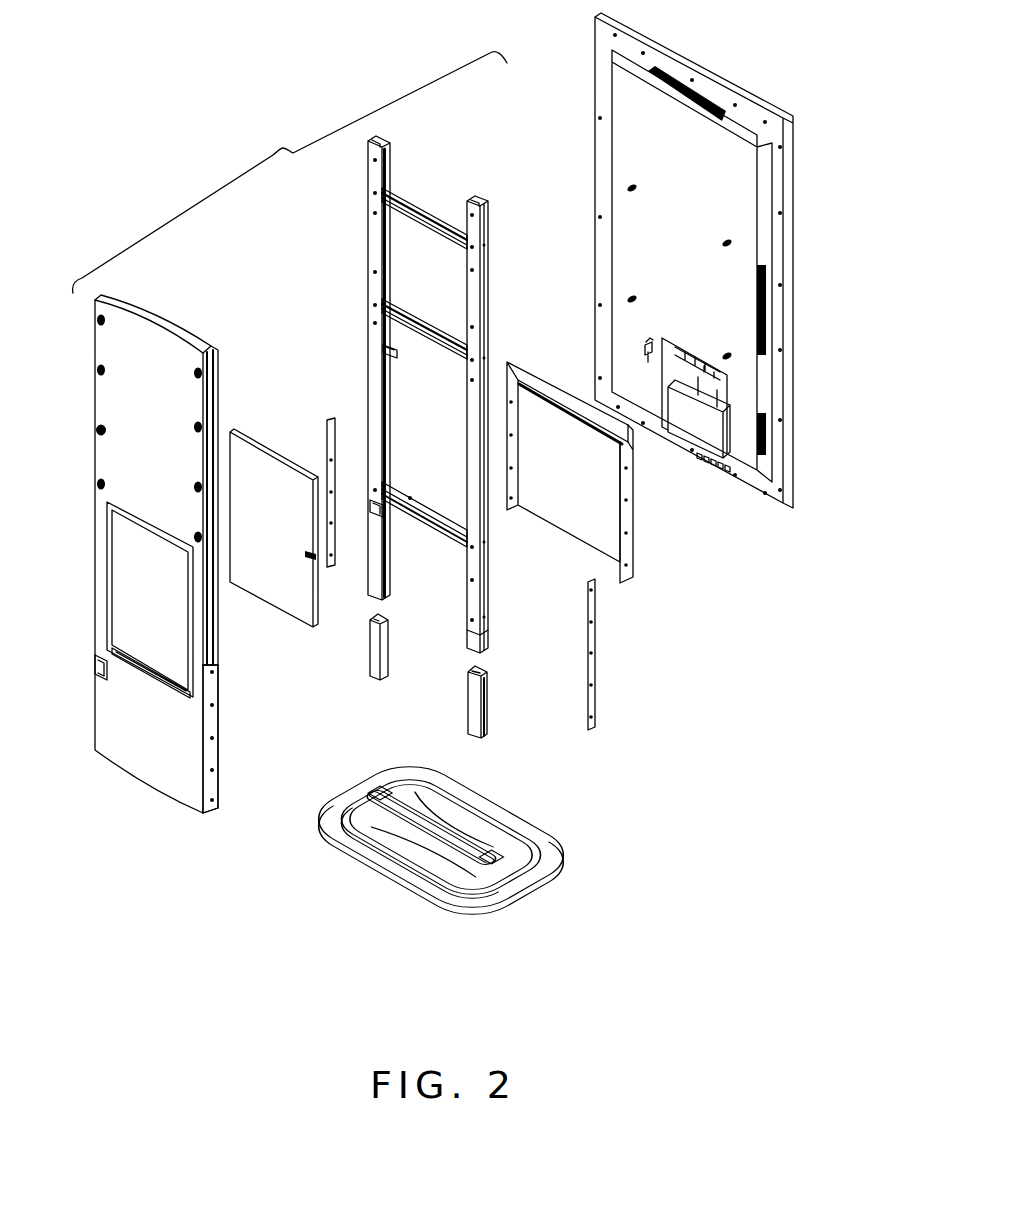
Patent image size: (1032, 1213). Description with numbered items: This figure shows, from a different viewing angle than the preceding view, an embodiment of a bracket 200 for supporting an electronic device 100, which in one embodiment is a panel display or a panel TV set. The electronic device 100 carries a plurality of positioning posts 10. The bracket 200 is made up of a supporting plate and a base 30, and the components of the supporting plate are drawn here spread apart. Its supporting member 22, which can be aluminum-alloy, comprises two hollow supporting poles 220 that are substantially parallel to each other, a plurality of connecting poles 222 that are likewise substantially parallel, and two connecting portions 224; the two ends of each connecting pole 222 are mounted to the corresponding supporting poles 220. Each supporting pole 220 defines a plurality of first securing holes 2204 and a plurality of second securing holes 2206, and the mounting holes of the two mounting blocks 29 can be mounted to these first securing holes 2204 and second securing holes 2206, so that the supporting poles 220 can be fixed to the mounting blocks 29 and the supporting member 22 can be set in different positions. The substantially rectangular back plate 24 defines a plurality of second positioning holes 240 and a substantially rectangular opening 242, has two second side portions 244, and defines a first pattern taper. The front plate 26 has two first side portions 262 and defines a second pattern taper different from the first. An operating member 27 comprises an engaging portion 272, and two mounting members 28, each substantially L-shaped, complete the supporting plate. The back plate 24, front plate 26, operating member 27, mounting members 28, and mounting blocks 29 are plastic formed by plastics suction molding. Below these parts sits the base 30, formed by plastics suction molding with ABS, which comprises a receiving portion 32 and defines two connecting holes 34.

The electronic device 100 is at (677, 58).
The positioning posts 10 is at (630, 187).
The bracket 200 is at (290, 172).
The supporting member 22 is at (406, 437).
The supporting poles 220 is at (376, 174).
The connecting poles 222 is at (400, 310).
The connecting portions 224 is at (385, 348).
The first securing holes 2204 is at (484, 645).
The second securing holes 2206 is at (484, 612).
The back plate 24 is at (108, 396).
The second positioning holes 240 is at (100, 430).
The opening 242 is at (122, 545).
The second side portions 244 is at (212, 722).
The front plate 26 is at (578, 505).
The first side portions 262 is at (636, 525).
The operating member 27 is at (262, 462).
The engaging portion 272 is at (308, 557).
The mounting members 28 is at (595, 698).
The mounting blocks 29 is at (487, 702).
The base 30 is at (510, 828).
The receiving portion 32 is at (450, 845).
The connecting holes 34 is at (543, 882).